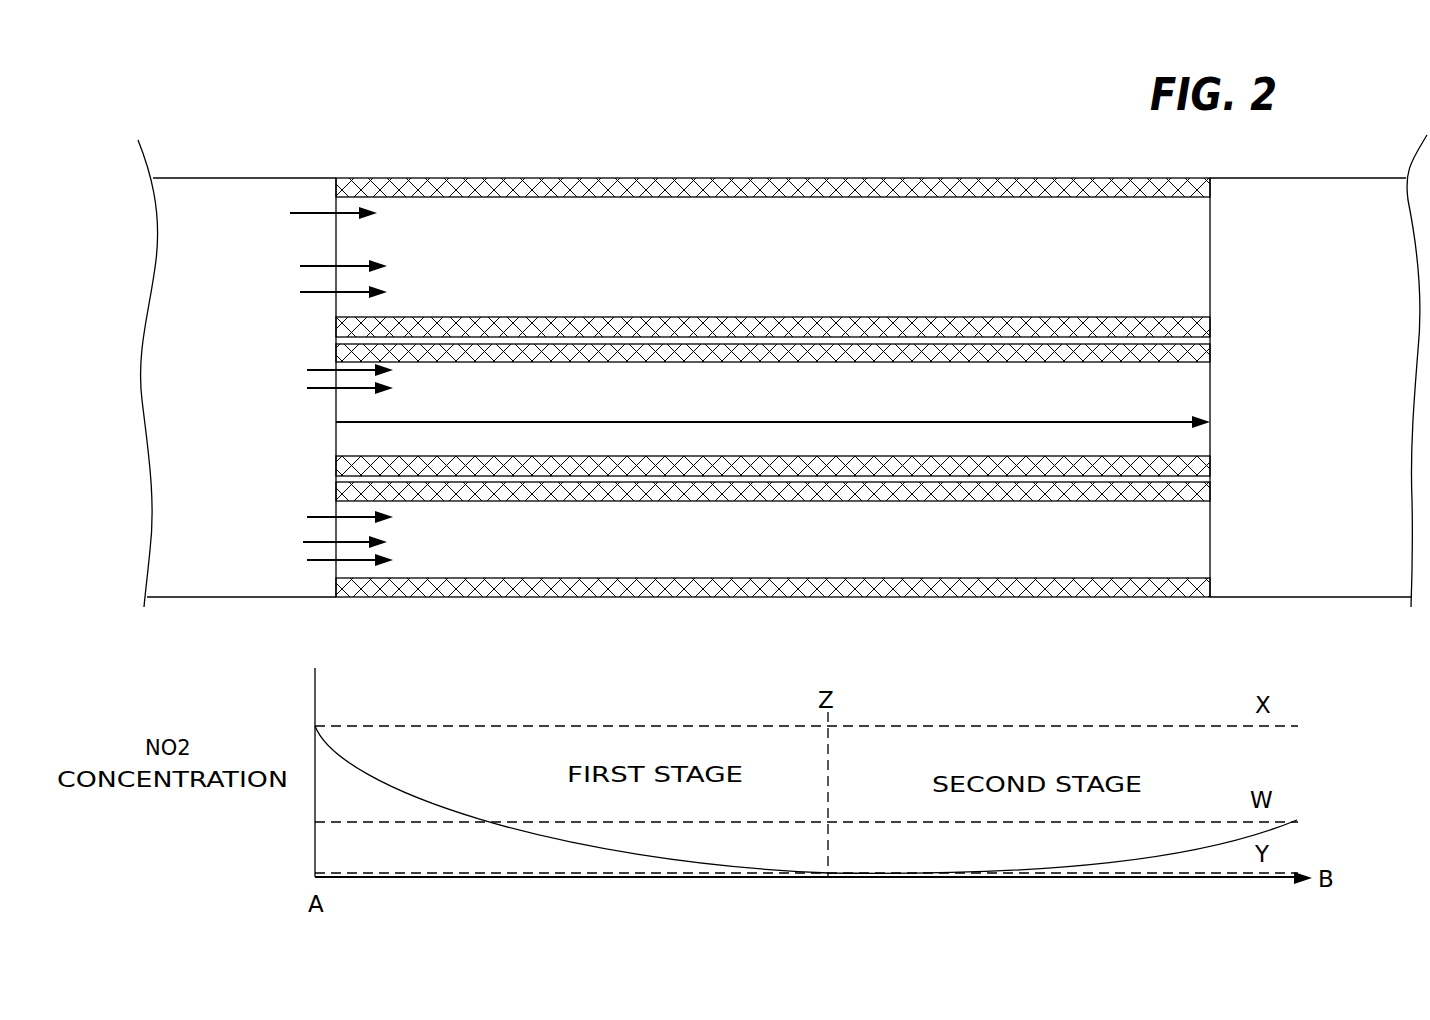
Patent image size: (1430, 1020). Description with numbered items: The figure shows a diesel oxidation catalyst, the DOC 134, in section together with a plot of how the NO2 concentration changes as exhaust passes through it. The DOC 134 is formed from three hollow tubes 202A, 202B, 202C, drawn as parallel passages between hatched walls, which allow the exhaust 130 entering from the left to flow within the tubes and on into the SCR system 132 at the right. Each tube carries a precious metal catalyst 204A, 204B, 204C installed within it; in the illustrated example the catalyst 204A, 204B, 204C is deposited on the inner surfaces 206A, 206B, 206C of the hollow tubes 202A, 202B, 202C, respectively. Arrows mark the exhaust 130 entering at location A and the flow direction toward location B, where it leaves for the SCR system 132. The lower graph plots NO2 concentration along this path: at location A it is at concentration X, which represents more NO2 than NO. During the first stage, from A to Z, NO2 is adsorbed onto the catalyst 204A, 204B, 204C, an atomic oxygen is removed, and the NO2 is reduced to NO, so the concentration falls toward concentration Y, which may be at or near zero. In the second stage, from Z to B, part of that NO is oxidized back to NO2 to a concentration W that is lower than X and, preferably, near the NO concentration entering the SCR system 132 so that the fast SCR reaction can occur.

The exhaust 130 is at (237, 373).
The SCR system 132 is at (1318, 371).
The DOC 134 is at (345, 130).
The hollow tube 202A is at (860, 216).
The hollow tube 202B is at (960, 368).
The hollow tube 202C is at (950, 552).
The catalyst 204A is at (432, 317).
The catalyst 204B is at (652, 457).
The catalyst 204C is at (600, 501).
The inner surface 206A is at (500, 335).
The inner surface 206B is at (752, 472).
The inner surface 206C is at (727, 482).